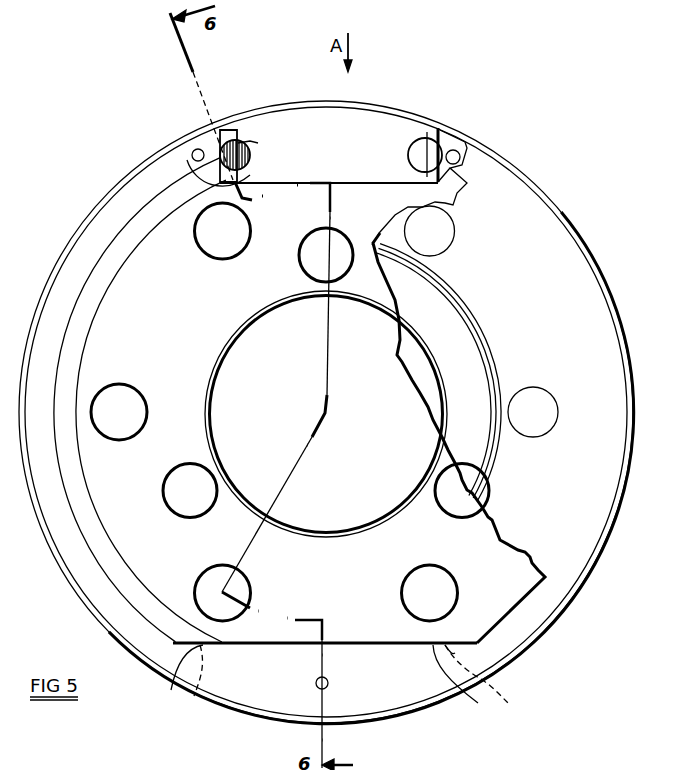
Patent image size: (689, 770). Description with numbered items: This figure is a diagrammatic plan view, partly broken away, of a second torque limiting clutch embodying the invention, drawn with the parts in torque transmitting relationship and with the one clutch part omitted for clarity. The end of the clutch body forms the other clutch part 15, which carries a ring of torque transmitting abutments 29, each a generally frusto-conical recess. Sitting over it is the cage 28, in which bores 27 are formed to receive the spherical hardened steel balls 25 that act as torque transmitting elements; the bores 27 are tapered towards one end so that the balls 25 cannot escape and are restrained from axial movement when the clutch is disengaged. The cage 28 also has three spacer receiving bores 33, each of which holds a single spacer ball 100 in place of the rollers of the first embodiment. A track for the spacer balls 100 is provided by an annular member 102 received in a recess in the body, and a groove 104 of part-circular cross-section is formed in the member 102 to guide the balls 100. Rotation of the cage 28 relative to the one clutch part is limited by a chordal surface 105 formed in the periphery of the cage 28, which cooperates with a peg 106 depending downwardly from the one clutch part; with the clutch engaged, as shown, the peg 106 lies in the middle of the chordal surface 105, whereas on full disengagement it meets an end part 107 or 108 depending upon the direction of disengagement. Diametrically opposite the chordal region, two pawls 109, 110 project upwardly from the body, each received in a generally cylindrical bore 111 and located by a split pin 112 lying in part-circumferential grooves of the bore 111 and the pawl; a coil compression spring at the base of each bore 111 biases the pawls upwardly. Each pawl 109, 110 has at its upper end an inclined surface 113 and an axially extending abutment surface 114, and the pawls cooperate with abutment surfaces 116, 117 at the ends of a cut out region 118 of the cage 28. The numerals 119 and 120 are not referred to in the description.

The clutch part 15 is at (105, 633).
The balls 25 is at (120, 394).
The bores 27 is at (147, 412).
The cage 28 is at (138, 562).
The torque transmitting abutments 29 is at (452, 232).
The spacer receiving bores 33 is at (300, 263).
The ball 100 is at (208, 508).
The annular member 102 is at (478, 322).
The groove 104 is at (478, 450).
The chordal surface 105 is at (466, 692).
The peg 106 is at (341, 730).
The end part 107 is at (172, 690).
The end part 108 is at (455, 653).
The pawl 109 is at (228, 131).
The pawl 110 is at (435, 130).
The bore 111 is at (250, 165).
The split pin 112 is at (193, 150).
The inclined surface 113 is at (245, 141).
The abutment surface 114 is at (211, 120).
The abutment surface 116 is at (217, 193).
The abutment surface 117 is at (433, 187).
The cut out region 118 is at (278, 183).
The roller (right) 119 is at (414, 142).
The ball (right) 120 is at (463, 153).